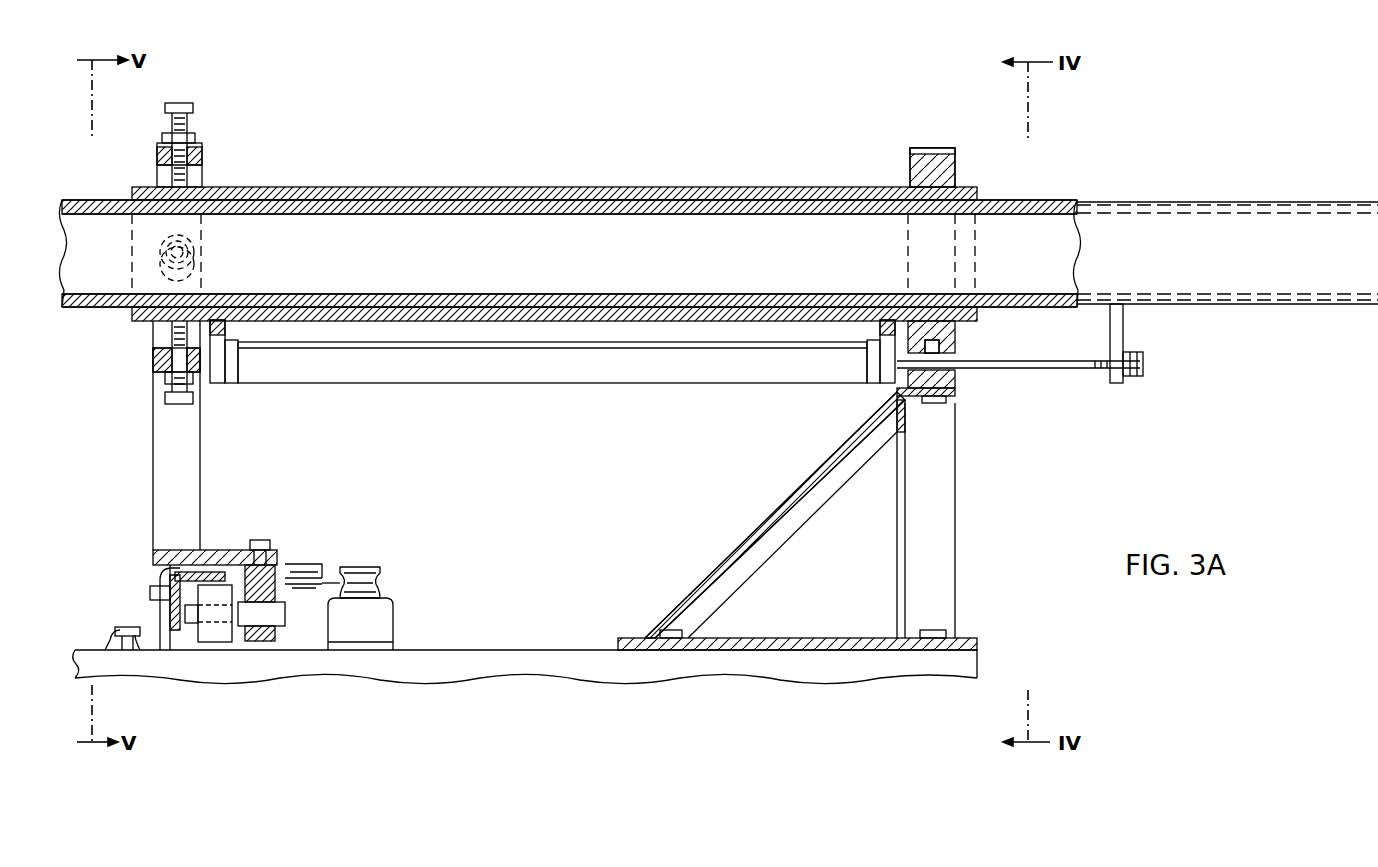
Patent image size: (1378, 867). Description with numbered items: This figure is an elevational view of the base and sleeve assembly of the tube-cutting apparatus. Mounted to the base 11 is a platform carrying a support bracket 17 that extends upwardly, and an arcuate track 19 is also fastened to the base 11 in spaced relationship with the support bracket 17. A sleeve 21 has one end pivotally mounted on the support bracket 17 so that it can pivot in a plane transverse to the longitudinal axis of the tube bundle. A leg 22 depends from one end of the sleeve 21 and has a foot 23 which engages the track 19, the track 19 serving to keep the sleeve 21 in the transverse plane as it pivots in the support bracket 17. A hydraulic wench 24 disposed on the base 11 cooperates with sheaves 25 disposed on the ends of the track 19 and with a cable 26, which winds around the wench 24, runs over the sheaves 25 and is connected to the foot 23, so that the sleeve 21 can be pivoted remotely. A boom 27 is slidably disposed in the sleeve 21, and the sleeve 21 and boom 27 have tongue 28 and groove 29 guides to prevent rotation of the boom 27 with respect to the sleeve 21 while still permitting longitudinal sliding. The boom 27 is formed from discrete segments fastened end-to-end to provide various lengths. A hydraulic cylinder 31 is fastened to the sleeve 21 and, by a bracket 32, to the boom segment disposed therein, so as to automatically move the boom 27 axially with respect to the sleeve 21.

The base 11 is at (505, 650).
The support bracket 17 is at (945, 518).
The arcuate track 19 is at (170, 580).
The sleeve 21 is at (283, 187).
The leg 22 is at (188, 448).
The foot 23 is at (272, 575).
The hydraulic wench 24 is at (380, 618).
The sheaves 25 is at (300, 586).
The cable 26 is at (326, 583).
The boom 27 is at (1248, 228).
The tongue 28 is at (648, 198).
The groove 29 is at (1052, 200).
The hydraulic cylinder 31 is at (585, 383).
The bracket 32 is at (1125, 333).